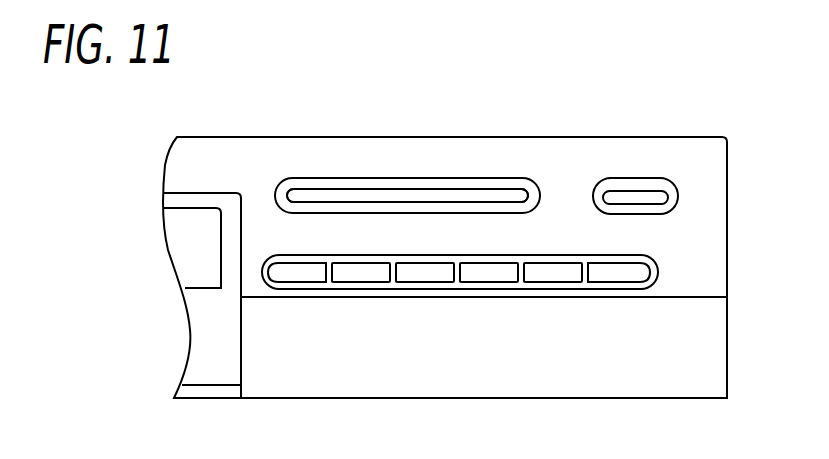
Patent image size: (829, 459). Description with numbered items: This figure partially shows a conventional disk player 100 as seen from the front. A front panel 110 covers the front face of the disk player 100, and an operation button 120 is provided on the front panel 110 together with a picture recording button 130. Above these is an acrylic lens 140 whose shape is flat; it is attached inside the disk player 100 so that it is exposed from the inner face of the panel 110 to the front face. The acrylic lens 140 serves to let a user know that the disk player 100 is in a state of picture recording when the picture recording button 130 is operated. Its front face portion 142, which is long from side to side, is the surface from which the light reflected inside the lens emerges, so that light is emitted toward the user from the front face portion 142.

The disk player 100 is at (565, 120).
The front panel 110 is at (229, 158).
The operation button 120 is at (678, 253).
The picture recording button 130 is at (660, 196).
The acrylic lens 140 is at (402, 192).
The front face portion 142 is at (407, 195).